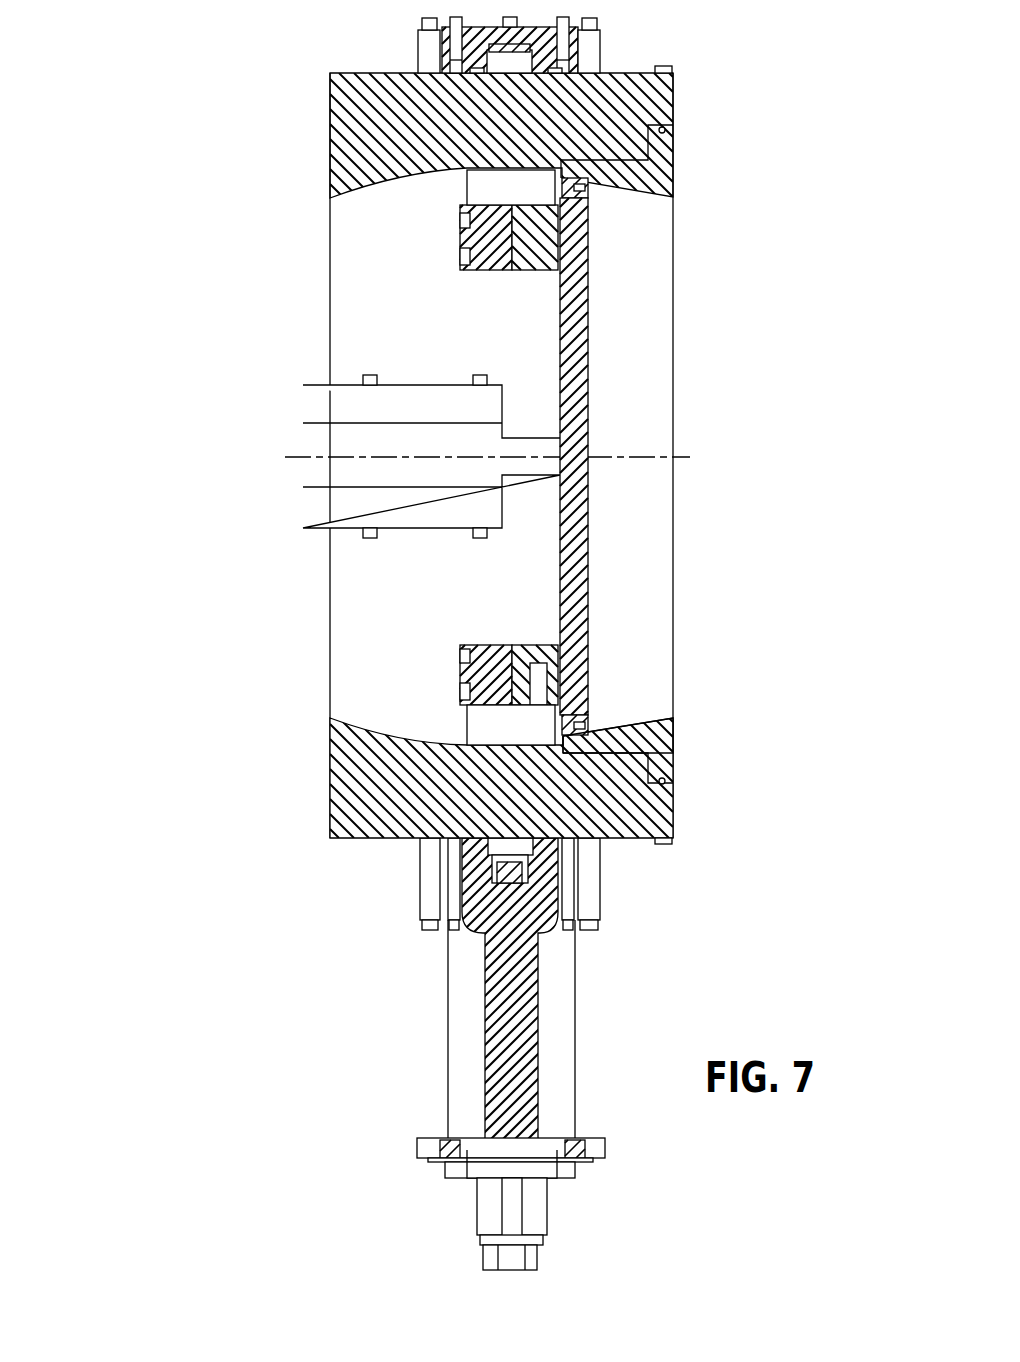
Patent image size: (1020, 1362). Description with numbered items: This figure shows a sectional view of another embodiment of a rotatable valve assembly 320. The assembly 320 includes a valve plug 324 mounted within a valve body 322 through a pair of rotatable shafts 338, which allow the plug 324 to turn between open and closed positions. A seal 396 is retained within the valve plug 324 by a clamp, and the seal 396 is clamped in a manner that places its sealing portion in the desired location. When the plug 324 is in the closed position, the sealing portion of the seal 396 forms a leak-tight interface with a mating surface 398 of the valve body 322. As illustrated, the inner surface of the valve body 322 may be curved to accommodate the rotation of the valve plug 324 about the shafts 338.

The rotatable valve assembly 320 is at (367, 643).
The valve body 322 is at (350, 784).
The valve plug 324 is at (590, 318).
The rotatable shafts 338 is at (487, 192).
The seal 396 is at (567, 737).
The mating surface 398 is at (662, 740).